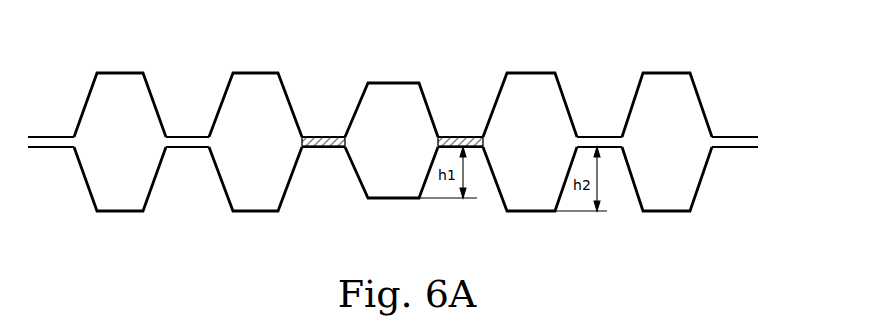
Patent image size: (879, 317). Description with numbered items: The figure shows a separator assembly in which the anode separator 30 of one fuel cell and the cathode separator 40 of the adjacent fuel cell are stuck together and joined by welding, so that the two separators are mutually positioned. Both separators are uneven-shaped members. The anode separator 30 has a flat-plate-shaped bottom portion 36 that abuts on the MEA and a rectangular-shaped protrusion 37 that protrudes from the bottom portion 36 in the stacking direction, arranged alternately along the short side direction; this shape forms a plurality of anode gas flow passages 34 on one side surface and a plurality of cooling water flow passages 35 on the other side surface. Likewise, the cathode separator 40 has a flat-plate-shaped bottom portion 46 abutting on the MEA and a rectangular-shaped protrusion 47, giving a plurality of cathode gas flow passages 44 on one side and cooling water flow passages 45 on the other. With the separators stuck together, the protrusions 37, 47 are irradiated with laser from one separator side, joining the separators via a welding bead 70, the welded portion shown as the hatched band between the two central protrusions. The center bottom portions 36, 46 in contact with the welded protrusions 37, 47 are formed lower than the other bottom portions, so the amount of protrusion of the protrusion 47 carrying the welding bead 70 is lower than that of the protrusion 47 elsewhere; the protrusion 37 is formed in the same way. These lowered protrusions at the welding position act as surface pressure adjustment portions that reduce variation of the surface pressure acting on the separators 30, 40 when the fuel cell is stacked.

The anode separator 30 is at (403, 77).
The cathode separator 40 is at (403, 208).
The anode gas flow passages 34 is at (191, 95).
The cooling water flow passages 35 is at (122, 93).
The bottom portion 36 is at (390, 81).
The protrusion 37 is at (326, 135).
The cathode gas flow passages 44 is at (184, 187).
The cooling water flow passages 45 is at (117, 185).
The bottom portion 46 is at (396, 201).
The protrusion 47 is at (322, 149).
The welding bead 70 is at (464, 134).